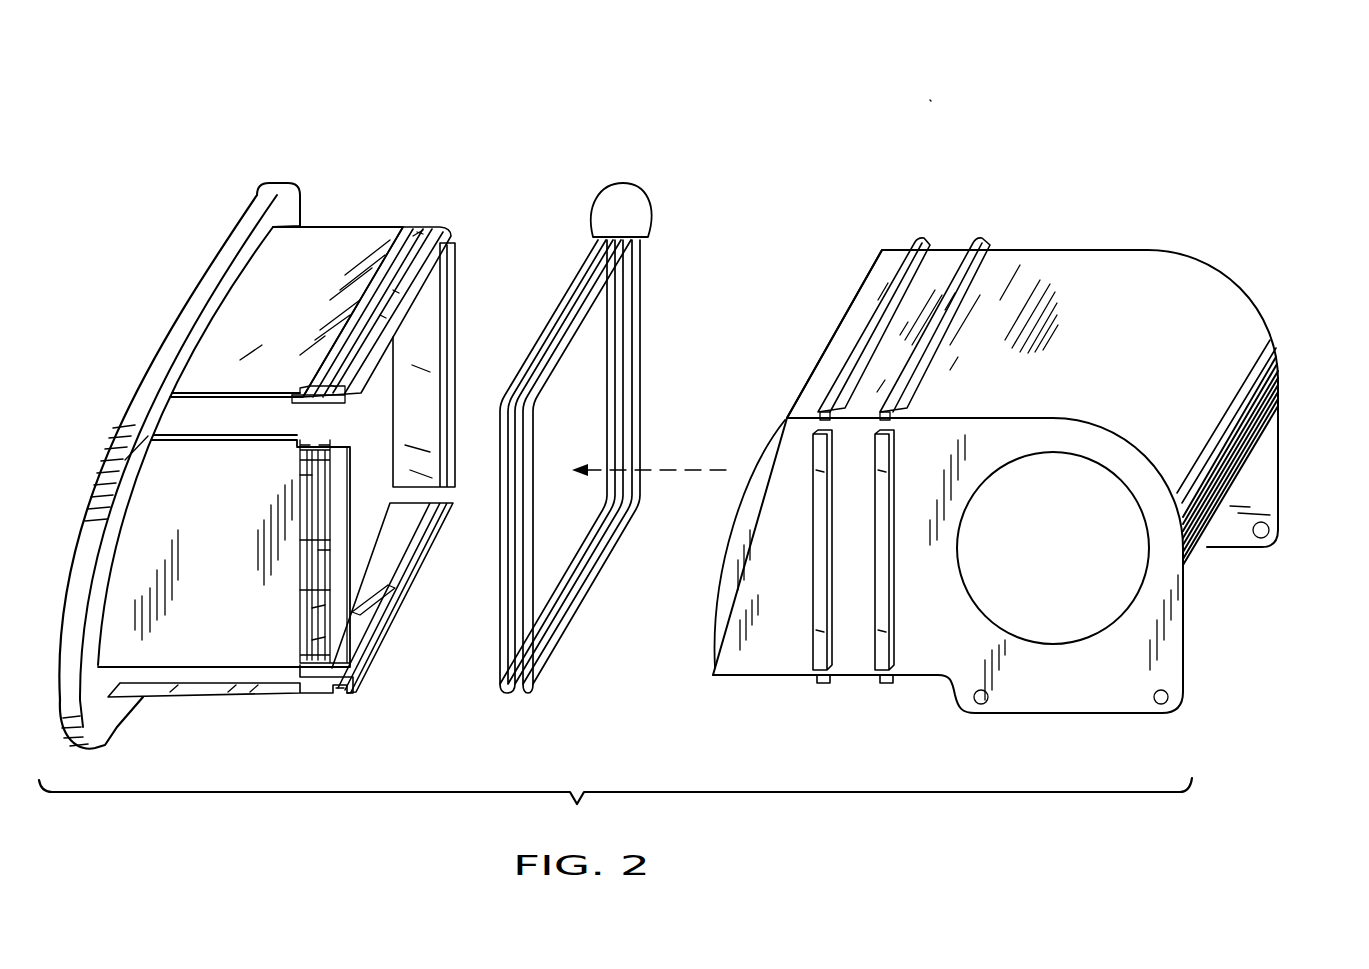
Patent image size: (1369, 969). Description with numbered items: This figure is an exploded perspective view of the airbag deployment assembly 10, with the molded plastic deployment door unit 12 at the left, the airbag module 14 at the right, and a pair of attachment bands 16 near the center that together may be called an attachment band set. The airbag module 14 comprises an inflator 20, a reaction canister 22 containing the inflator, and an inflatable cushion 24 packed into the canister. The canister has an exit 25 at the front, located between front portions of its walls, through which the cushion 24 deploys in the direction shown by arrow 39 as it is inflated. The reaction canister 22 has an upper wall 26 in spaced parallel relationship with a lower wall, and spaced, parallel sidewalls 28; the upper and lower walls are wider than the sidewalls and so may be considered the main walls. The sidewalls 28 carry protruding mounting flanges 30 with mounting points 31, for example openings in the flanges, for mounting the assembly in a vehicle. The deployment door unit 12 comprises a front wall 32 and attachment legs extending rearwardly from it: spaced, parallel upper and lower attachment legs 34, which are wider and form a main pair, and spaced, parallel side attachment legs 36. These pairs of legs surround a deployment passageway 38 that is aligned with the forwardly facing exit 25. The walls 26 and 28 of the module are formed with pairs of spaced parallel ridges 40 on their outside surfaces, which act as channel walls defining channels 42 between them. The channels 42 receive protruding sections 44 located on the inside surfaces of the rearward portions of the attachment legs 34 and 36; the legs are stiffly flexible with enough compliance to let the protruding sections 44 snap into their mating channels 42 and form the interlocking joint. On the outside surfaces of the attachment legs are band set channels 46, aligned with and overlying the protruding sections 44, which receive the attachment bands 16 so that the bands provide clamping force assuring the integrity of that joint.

The airbag deployment assembly 10 is at (927, 104).
The molded plastic deployment door unit 12 is at (193, 291).
The airbag module 14 is at (1142, 243).
The attachment band 16 is at (596, 205).
The inflator 20 is at (1073, 551).
The reaction canister 22 is at (1243, 394).
The inflatable cushion 24 is at (753, 465).
The exit 25 is at (808, 381).
The upper wall 26 is at (1003, 250).
The sidewall 28 is at (913, 653).
The mounting flange 30 is at (1080, 693).
The mounting point 31 is at (984, 705).
The front wall 32 is at (165, 412).
The upper and lower attachment legs 34 is at (332, 238).
The side attachment legs 36 is at (387, 371).
The deployment passageway 38 is at (380, 452).
The arrow 39 is at (688, 477).
The ridges 40 is at (947, 307).
The channels 42 is at (943, 264).
The protruding sections 44 is at (430, 302).
The band set channels 46 is at (417, 230).